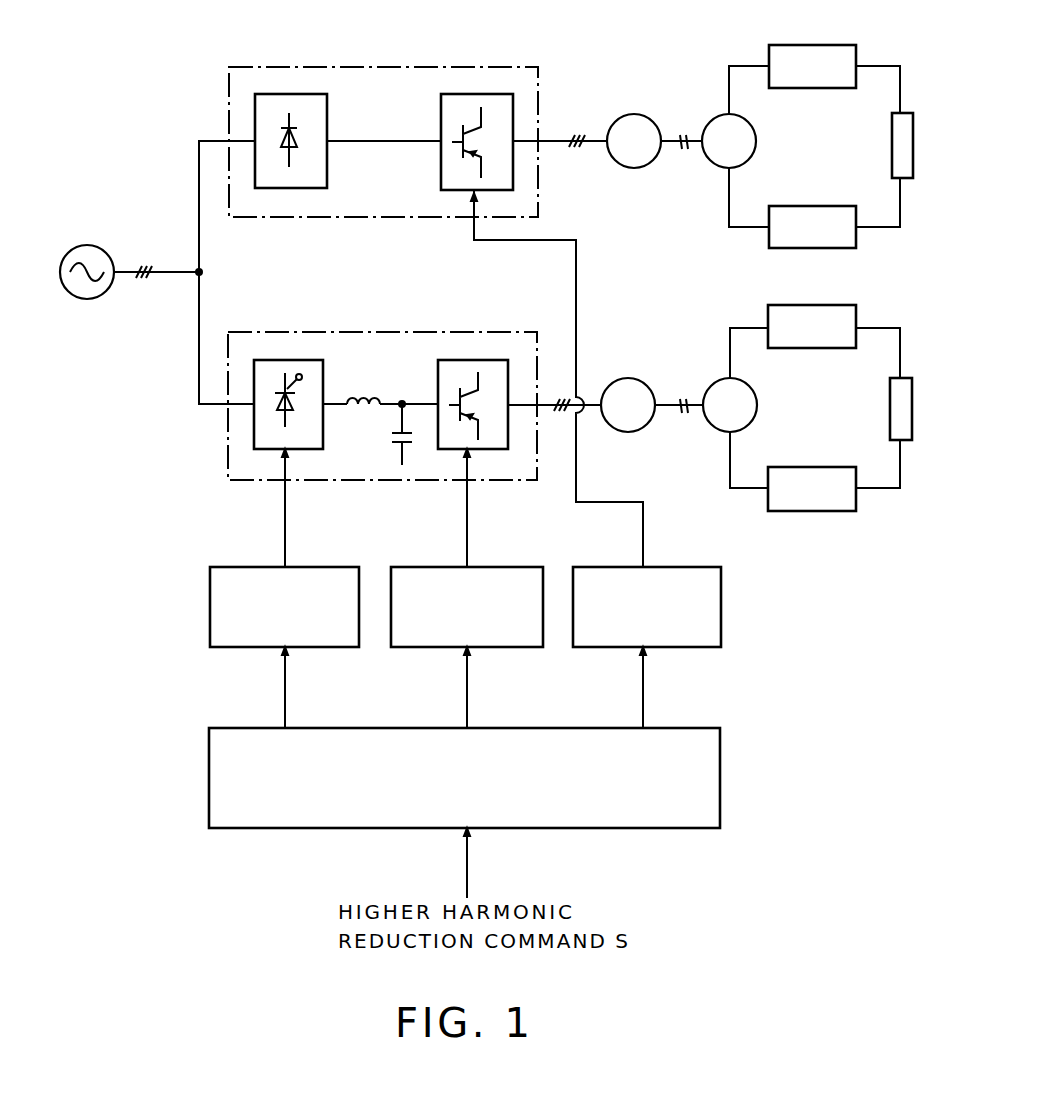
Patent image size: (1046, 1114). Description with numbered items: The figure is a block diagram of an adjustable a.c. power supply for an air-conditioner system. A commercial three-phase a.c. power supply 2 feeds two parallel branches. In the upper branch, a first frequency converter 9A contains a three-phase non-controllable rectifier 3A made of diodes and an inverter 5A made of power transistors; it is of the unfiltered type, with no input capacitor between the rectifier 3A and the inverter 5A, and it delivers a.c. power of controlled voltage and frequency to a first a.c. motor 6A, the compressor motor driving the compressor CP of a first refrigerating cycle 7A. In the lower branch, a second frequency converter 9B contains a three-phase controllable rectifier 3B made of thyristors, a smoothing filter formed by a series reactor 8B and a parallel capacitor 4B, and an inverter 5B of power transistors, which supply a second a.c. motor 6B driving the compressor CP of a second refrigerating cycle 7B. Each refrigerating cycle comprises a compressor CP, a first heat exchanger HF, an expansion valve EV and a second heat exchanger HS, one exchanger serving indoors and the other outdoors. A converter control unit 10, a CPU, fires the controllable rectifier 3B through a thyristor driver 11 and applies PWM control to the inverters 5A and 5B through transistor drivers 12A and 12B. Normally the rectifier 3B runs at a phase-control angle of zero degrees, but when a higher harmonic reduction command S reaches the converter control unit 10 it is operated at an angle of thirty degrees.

The commercial three-phase a.c. power supply 2 is at (87, 245).
The first frequency converter 9A is at (262, 67).
The three-phase non-controllable rectifier 3A is at (296, 94).
The inverter 5A is at (487, 94).
The first a.c. motor 6A is at (634, 114).
The first refrigerating cycle 7A is at (808, 146).
The second frequency converter 9B is at (261, 332).
The three-phase controllable rectifier 3B is at (300, 360).
The inverter 5B is at (488, 360).
The second a.c. motor 6B is at (628, 378).
The second refrigerating cycle 7B is at (807, 408).
The series reactor 8B is at (360, 398).
The parallel capacitor 4B is at (388, 440).
The thyristor driver 11 is at (318, 567).
The transistor driver 12B is at (500, 567).
The transistor driver 12A is at (678, 567).
The converter control unit 10 is at (720, 746).